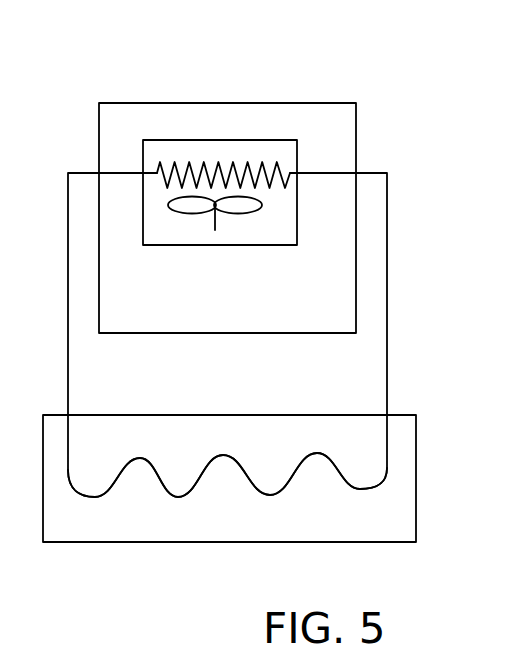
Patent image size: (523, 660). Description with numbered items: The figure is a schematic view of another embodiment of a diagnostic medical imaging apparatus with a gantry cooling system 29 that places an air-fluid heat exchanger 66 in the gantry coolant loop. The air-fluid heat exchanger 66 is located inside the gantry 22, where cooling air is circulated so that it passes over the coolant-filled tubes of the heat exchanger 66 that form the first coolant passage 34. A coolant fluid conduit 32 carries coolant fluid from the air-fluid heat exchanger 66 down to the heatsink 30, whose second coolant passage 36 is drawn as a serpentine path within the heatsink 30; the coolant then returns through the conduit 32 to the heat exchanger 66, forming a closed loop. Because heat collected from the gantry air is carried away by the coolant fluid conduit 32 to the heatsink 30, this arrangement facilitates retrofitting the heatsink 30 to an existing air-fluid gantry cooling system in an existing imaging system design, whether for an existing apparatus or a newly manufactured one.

The gantry 22 is at (365, 128).
The gantry cooling system 29 is at (410, 358).
The heatsink 30 is at (422, 483).
The coolant fluid conduit 32 is at (130, 165).
The first coolant passage 34 is at (279, 160).
The second coolant passage 36 is at (158, 494).
The air-fluid heat exchanger 66 is at (243, 140).